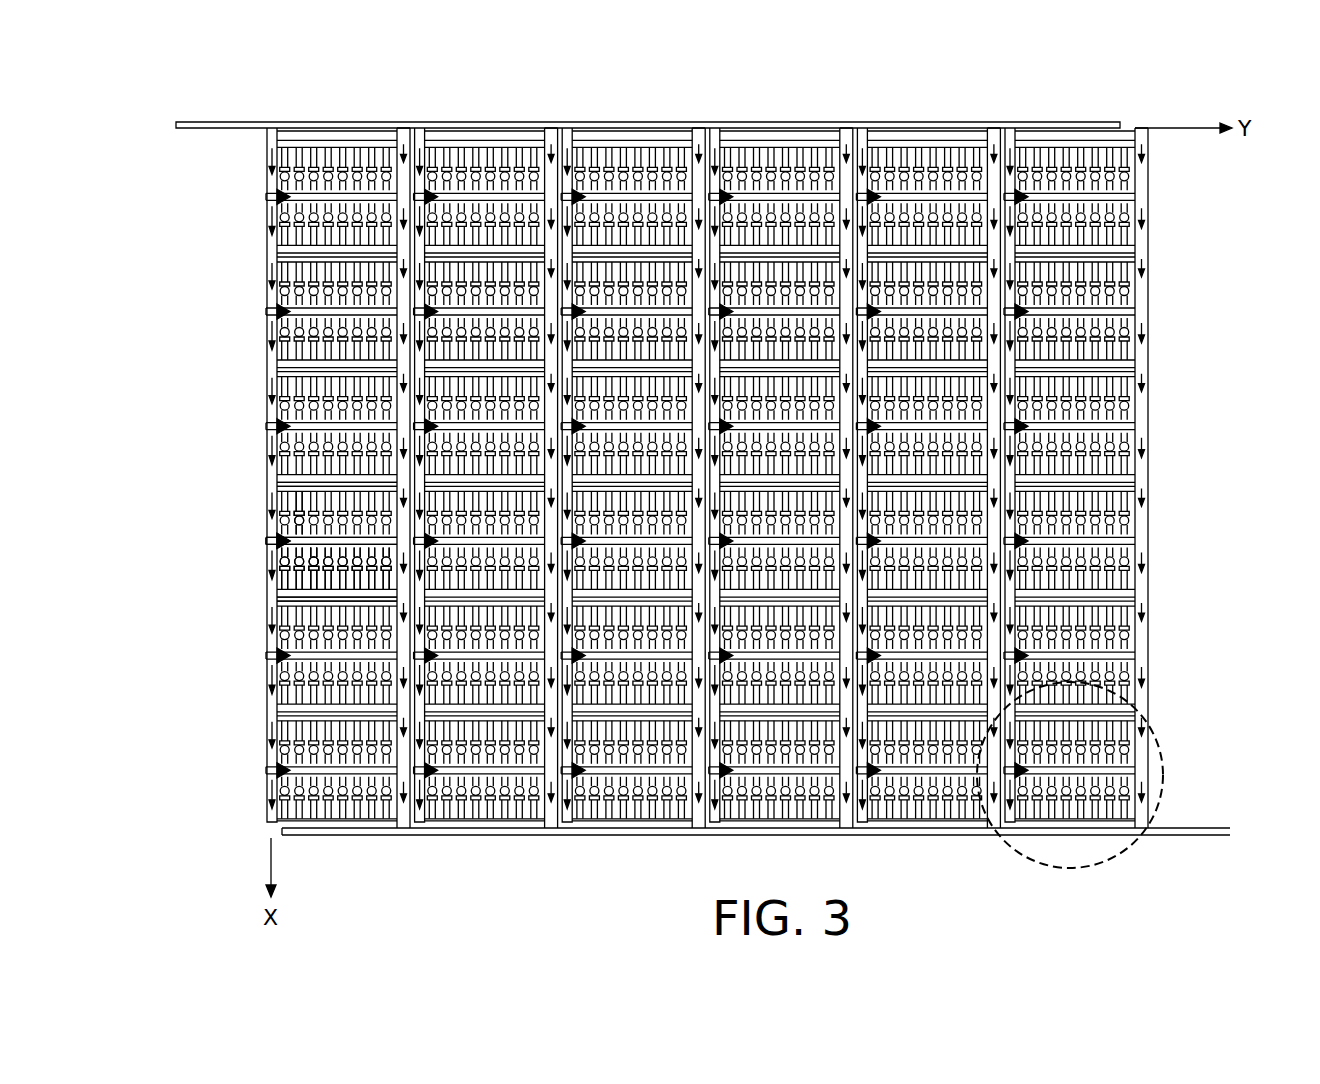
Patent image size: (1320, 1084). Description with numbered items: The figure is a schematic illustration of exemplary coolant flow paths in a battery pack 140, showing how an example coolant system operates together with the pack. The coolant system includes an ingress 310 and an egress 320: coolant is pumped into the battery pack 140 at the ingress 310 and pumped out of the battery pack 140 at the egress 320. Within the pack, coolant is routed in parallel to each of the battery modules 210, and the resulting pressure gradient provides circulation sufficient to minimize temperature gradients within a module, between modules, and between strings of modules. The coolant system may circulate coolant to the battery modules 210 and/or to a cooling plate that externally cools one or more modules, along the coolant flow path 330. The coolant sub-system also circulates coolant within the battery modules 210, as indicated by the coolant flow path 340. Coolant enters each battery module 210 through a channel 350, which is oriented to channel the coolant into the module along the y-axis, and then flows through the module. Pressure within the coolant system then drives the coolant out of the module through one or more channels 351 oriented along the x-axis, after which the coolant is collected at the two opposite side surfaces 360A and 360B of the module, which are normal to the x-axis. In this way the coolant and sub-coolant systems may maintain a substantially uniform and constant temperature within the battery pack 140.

The battery pack 140 is at (309, 99).
The ingress 310 is at (207, 134).
The egress 320 is at (1188, 830).
The coolant flow path 330 is at (268, 292).
The coolant flow path 340 is at (284, 540).
The channel 350 is at (300, 570).
The channel 351 is at (317, 547).
The side surface 360A is at (270, 482).
The side surface 360B is at (312, 602).
The battery module 210 is at (1142, 722).